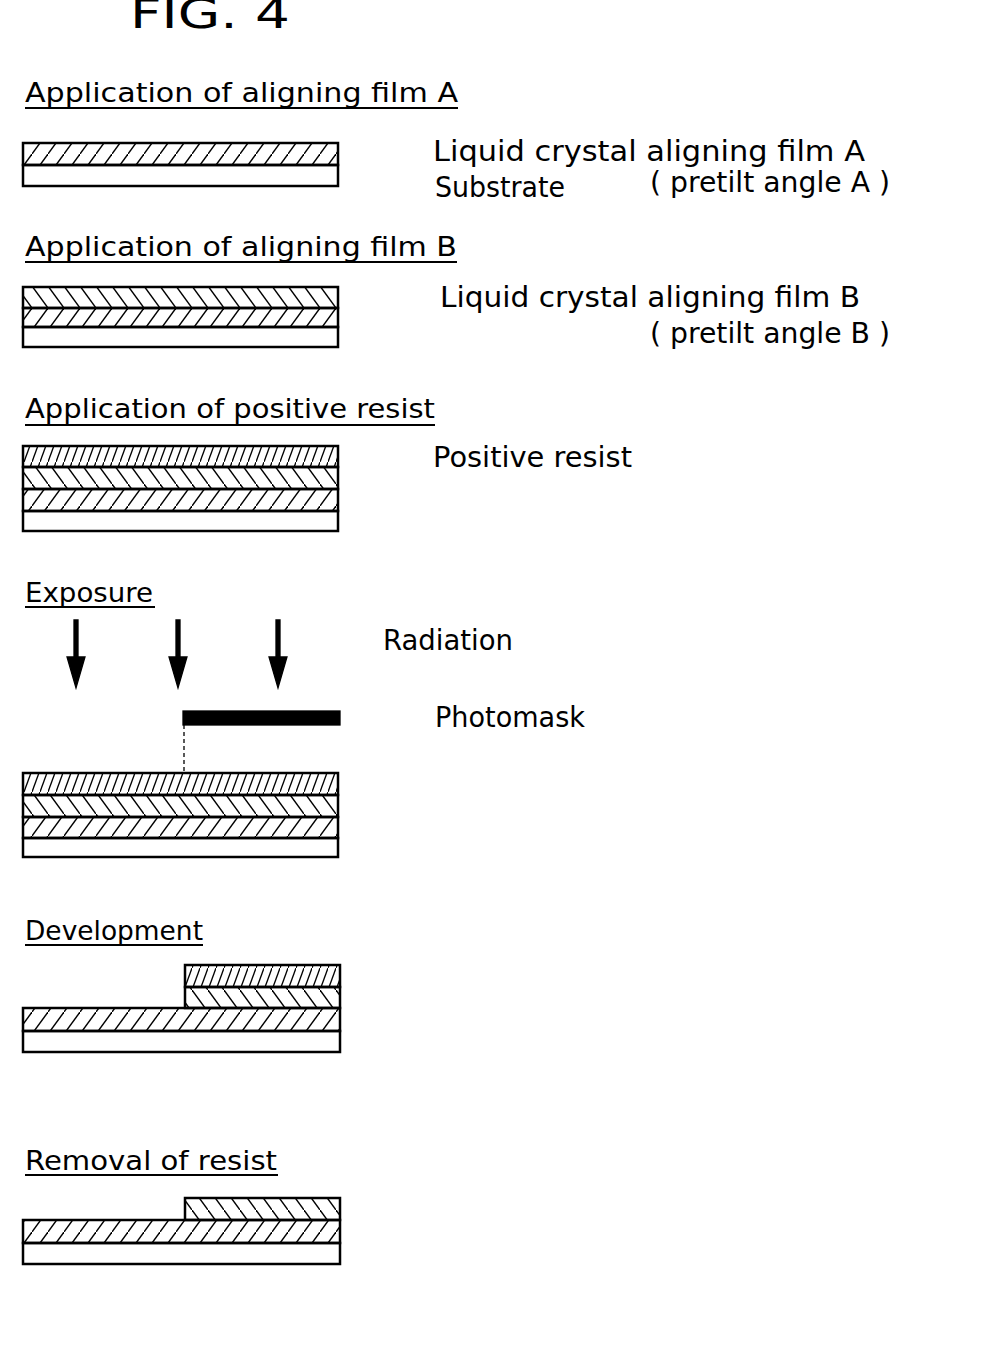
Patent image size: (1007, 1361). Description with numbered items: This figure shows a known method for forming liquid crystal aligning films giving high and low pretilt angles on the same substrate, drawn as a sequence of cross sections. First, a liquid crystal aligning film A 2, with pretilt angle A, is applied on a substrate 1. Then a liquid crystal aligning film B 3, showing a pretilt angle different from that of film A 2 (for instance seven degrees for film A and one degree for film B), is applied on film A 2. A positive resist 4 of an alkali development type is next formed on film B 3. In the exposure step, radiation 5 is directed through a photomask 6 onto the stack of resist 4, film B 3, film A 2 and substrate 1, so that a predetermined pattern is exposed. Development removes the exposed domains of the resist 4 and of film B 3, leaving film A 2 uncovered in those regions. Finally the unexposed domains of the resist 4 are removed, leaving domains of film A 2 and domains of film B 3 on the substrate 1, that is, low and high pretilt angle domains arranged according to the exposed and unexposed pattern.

The substrate 1 is at (330, 171).
The liquid crystal aligning film A 2 is at (330, 152).
The liquid crystal aligning film B 3 is at (330, 292).
The positive resist 4 is at (330, 455).
The radiation 5 is at (281, 641).
The photomask 6 is at (342, 717).